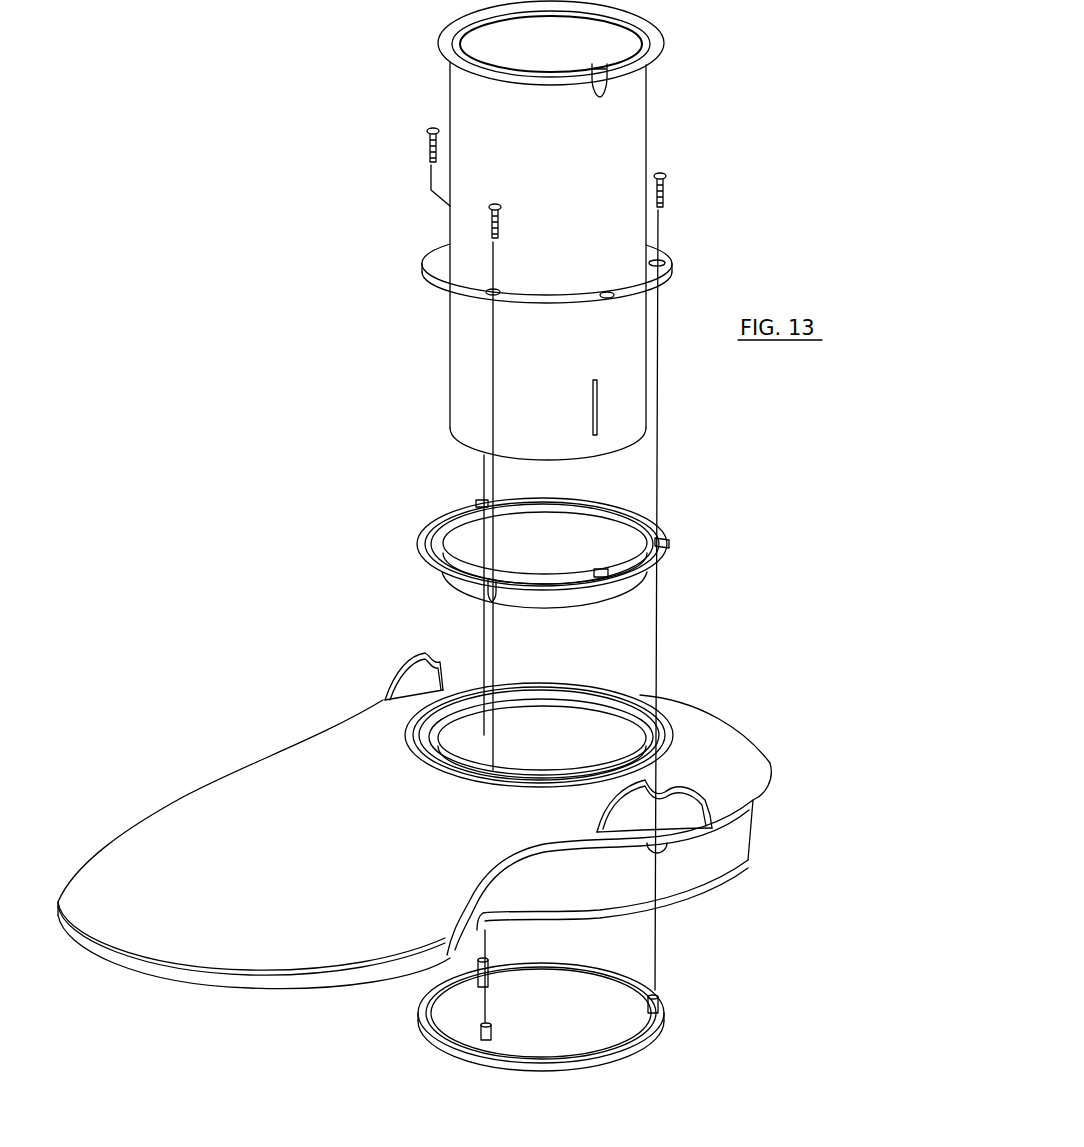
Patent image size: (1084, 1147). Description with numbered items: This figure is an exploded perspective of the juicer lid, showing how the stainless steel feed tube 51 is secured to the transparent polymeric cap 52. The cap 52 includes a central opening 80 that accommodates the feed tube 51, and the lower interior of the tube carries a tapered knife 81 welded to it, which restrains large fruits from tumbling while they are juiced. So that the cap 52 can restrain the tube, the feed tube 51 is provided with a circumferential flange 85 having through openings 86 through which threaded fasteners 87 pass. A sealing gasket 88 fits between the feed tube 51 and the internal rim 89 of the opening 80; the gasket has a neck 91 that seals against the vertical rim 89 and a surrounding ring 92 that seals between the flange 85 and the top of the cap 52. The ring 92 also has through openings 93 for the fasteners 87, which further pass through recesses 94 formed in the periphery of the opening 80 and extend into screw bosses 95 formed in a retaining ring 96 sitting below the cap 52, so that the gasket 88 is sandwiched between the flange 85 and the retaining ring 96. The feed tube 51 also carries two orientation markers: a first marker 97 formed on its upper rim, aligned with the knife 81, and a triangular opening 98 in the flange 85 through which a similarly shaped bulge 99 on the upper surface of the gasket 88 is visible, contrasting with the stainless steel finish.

The feed tube 51 is at (619, 144).
The first marker 97 is at (608, 85).
The threaded fasteners 87 is at (668, 192).
The circumferential flange 85 is at (674, 268).
The through openings 86 is at (664, 262).
The opening 98 is at (612, 314).
The tapered knife 81 is at (600, 410).
The ring 92 is at (617, 500).
The bulge 99 is at (620, 506).
The sealing gasket 88 is at (672, 542).
The through openings 93 is at (480, 503).
The central opening 80 is at (607, 712).
The internal rim 89 is at (612, 690).
The neck 91 is at (583, 694).
The cap 52 is at (735, 745).
The recesses 94 is at (388, 695).
The retaining ring 96 is at (661, 1042).
The screw bosses 95 is at (658, 1000).